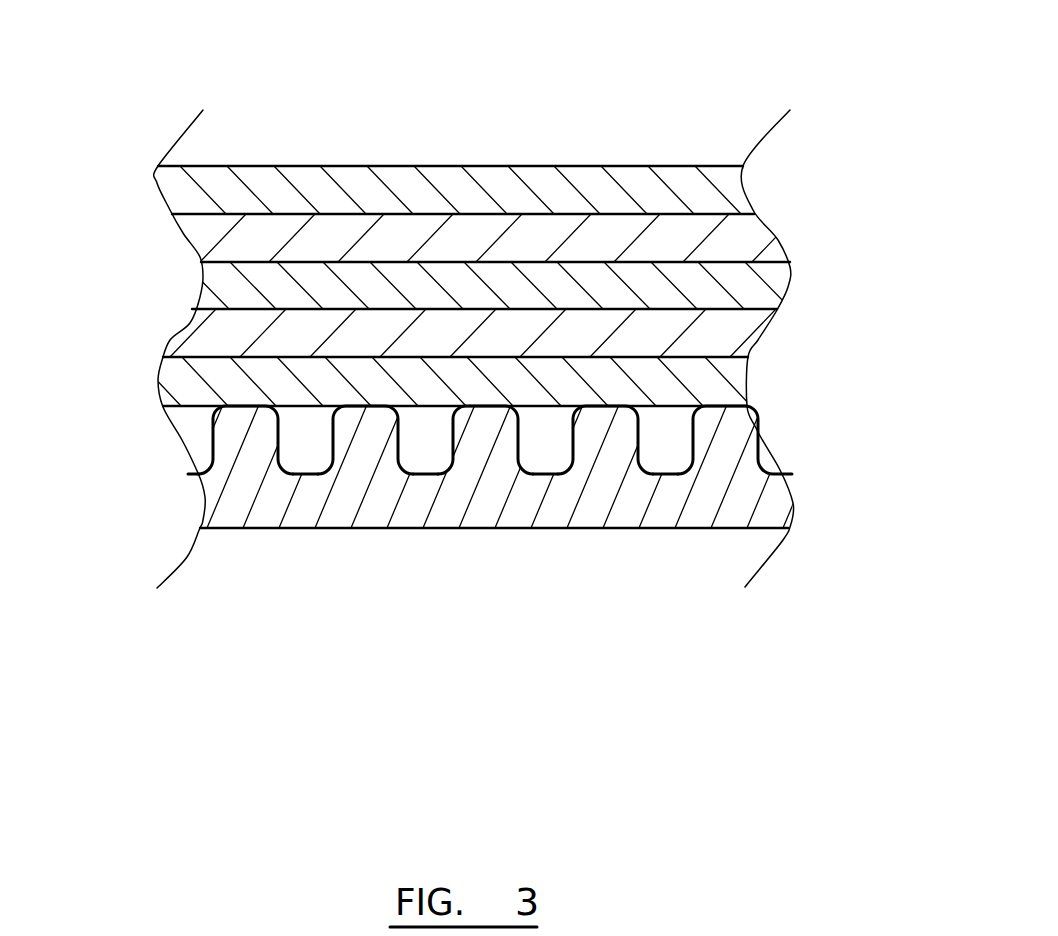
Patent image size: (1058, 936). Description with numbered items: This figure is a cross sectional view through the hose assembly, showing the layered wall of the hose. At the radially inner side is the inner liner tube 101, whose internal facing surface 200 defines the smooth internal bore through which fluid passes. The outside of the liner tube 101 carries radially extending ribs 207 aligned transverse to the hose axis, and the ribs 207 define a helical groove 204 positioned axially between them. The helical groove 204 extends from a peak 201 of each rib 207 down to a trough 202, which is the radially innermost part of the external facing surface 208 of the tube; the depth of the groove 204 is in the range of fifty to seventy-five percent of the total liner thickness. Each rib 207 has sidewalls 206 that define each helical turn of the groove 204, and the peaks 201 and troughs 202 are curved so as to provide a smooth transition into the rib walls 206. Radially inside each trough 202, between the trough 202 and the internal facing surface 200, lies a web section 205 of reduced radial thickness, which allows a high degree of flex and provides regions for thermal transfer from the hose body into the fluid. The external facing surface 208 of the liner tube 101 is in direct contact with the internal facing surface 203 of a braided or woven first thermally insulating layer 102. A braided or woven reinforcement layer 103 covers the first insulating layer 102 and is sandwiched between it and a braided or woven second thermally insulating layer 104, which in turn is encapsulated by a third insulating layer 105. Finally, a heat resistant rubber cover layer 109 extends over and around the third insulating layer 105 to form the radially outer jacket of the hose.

The inner liner tube 101 is at (772, 500).
The first thermally insulating layer 102 is at (708, 385).
The reinforcement layer 103 is at (723, 337).
The second thermally insulating layer 104 is at (752, 288).
The third insulating layer 105 is at (750, 237).
The heat resistant rubber cover layer 109 is at (402, 185).
The internal facing surface 200 is at (325, 534).
The peak 201 is at (247, 403).
The trough 202 is at (307, 471).
The internal facing surface of first insulating layer 203 is at (667, 407).
The helical groove 204 is at (545, 442).
The web section 205 is at (427, 498).
The sidewall 206 is at (400, 442).
The rib 207 is at (370, 433).
The external facing surface 208 is at (525, 420).